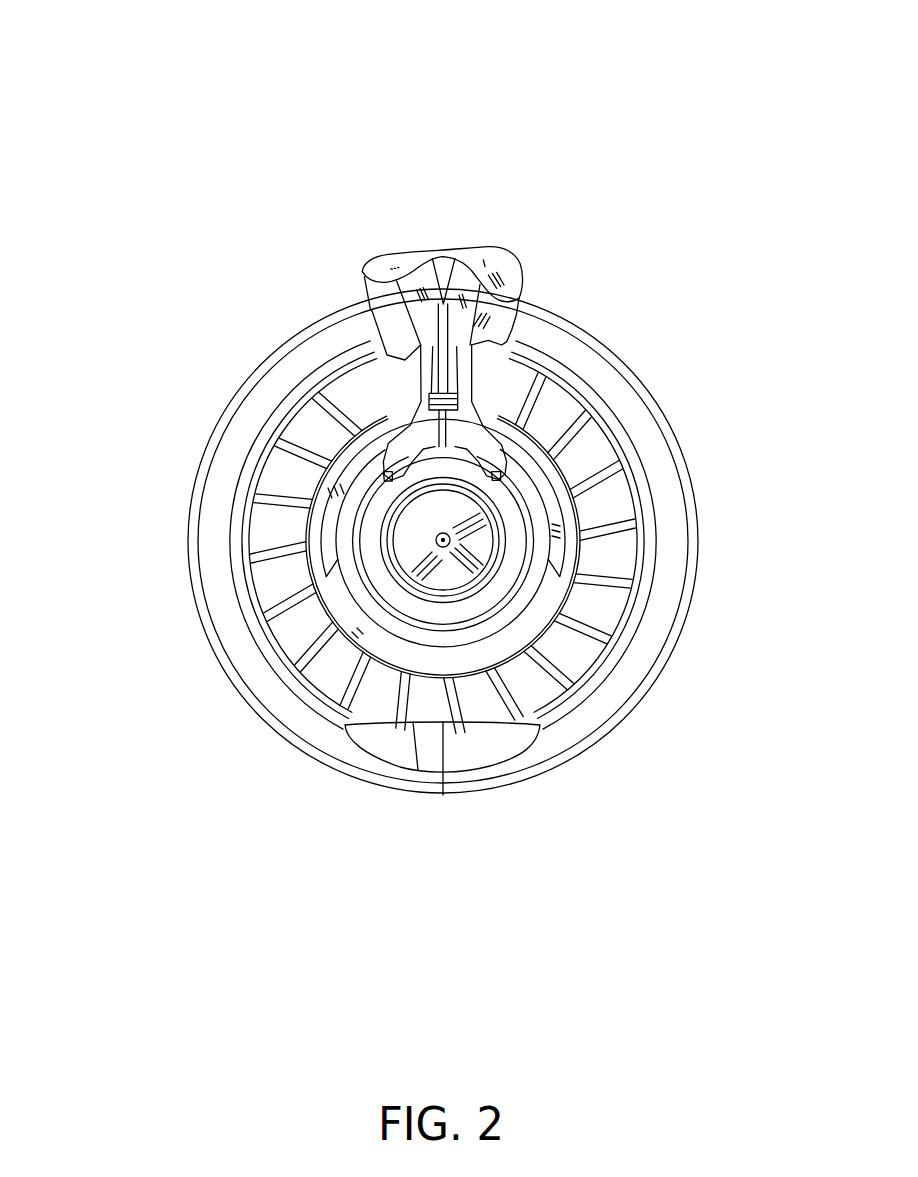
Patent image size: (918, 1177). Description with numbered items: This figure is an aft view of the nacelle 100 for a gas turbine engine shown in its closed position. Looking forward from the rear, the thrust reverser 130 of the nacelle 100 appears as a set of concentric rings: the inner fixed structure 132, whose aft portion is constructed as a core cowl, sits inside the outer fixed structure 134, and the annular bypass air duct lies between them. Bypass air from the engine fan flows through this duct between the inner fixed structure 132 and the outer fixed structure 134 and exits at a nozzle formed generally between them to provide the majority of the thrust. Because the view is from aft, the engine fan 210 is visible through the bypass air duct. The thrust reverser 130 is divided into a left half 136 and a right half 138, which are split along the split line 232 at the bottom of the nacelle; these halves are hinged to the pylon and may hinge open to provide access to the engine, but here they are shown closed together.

The nacelle 100 is at (621, 193).
The thrust reverser 130 is at (206, 565).
The inner fixed structure 132 is at (520, 437).
The outer fixed structure 134 is at (608, 497).
The left half 136 is at (248, 693).
The right half 138 is at (603, 737).
The engine fan 210 is at (597, 612).
The split line 232 is at (445, 750).